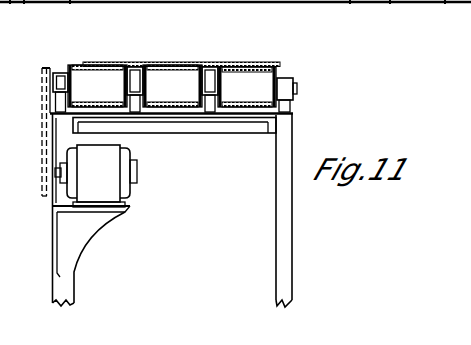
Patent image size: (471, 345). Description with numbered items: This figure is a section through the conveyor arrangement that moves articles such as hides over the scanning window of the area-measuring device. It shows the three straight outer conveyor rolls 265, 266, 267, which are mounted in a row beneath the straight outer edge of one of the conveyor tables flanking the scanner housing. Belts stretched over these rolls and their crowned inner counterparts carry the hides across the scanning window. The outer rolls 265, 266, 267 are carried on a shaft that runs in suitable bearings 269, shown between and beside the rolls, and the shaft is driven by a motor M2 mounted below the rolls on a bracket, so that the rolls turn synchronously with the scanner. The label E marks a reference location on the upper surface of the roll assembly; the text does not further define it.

The bearings 269 is at (59, 76).
The outer roll 267 is at (97, 86).
The outer roll 266 is at (172, 86).
The outer roll 265 is at (247, 87).
The reference point E is at (262, 44).
The motor M2 is at (96, 176).